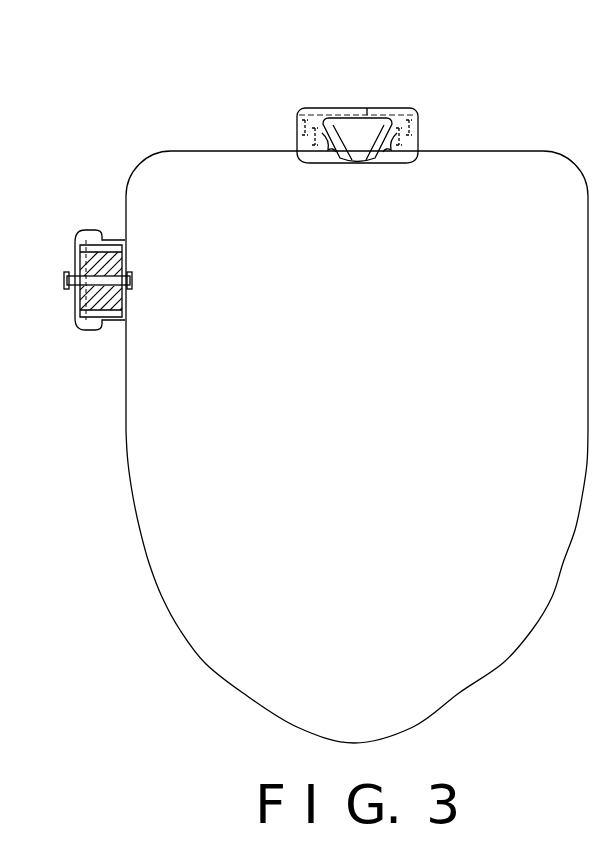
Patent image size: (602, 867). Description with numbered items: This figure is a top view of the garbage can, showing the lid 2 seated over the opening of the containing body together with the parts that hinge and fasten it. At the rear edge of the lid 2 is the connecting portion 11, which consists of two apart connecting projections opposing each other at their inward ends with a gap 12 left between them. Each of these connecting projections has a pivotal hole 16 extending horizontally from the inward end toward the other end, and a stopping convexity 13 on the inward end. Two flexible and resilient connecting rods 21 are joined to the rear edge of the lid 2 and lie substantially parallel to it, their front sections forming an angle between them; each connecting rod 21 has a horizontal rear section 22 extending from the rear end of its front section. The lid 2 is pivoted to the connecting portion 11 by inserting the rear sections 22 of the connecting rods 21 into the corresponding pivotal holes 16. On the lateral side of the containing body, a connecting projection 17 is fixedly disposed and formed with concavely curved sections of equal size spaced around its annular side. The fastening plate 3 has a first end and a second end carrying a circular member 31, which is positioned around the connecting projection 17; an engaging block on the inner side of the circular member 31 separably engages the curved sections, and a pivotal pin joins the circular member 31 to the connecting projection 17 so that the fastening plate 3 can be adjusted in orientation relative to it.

The lid 2 is at (490, 178).
The connecting portion 11 is at (405, 112).
The gap 12 is at (367, 128).
The stopping convexity 13 is at (332, 140).
The pivotal hole 16 is at (300, 122).
The connecting rod 21 is at (332, 160).
The rear section 22 is at (308, 162).
The fastening plate 3 is at (78, 340).
The circular member 31 is at (74, 238).
The connecting projection 17 is at (102, 252).